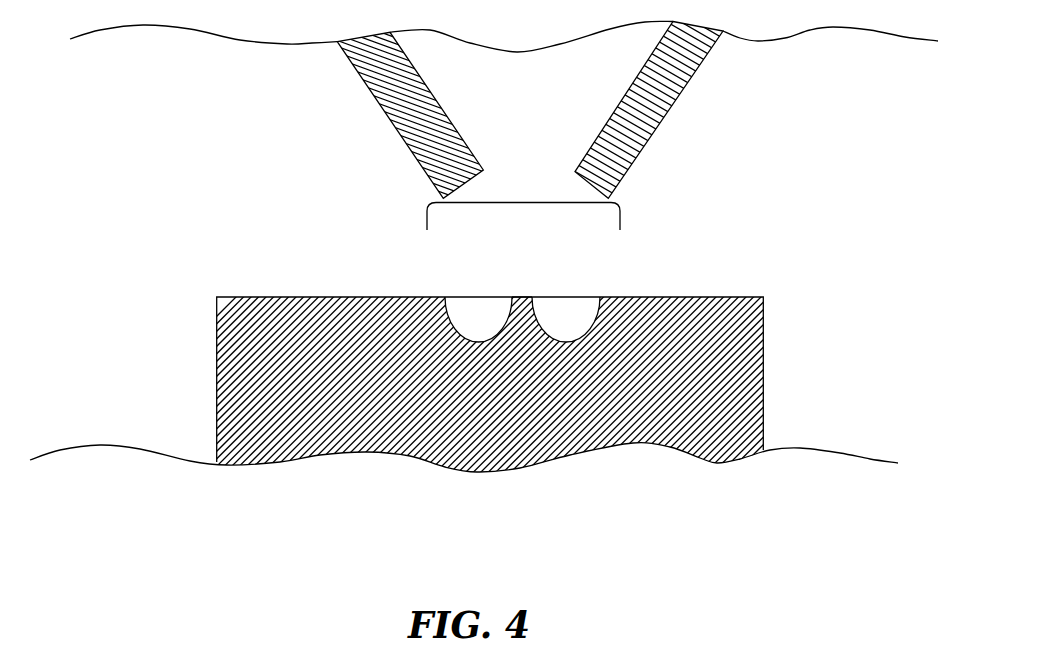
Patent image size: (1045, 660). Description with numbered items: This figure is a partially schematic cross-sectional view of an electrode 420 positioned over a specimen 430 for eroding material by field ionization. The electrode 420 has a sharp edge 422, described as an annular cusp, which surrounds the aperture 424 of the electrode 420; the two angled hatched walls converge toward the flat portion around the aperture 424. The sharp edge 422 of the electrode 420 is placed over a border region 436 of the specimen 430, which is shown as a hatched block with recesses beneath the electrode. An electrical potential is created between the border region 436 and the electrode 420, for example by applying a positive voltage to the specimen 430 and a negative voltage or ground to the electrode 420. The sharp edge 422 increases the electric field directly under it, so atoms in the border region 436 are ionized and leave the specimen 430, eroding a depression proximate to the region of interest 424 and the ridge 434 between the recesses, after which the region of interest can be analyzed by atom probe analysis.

The electrode 420 is at (646, 145).
The sharp edge 422 is at (427, 230).
The aperture 424 is at (513, 222).
The specimen 430 is at (763, 365).
The ridge between recesses 434 is at (522, 312).
The border region 436 is at (473, 342).